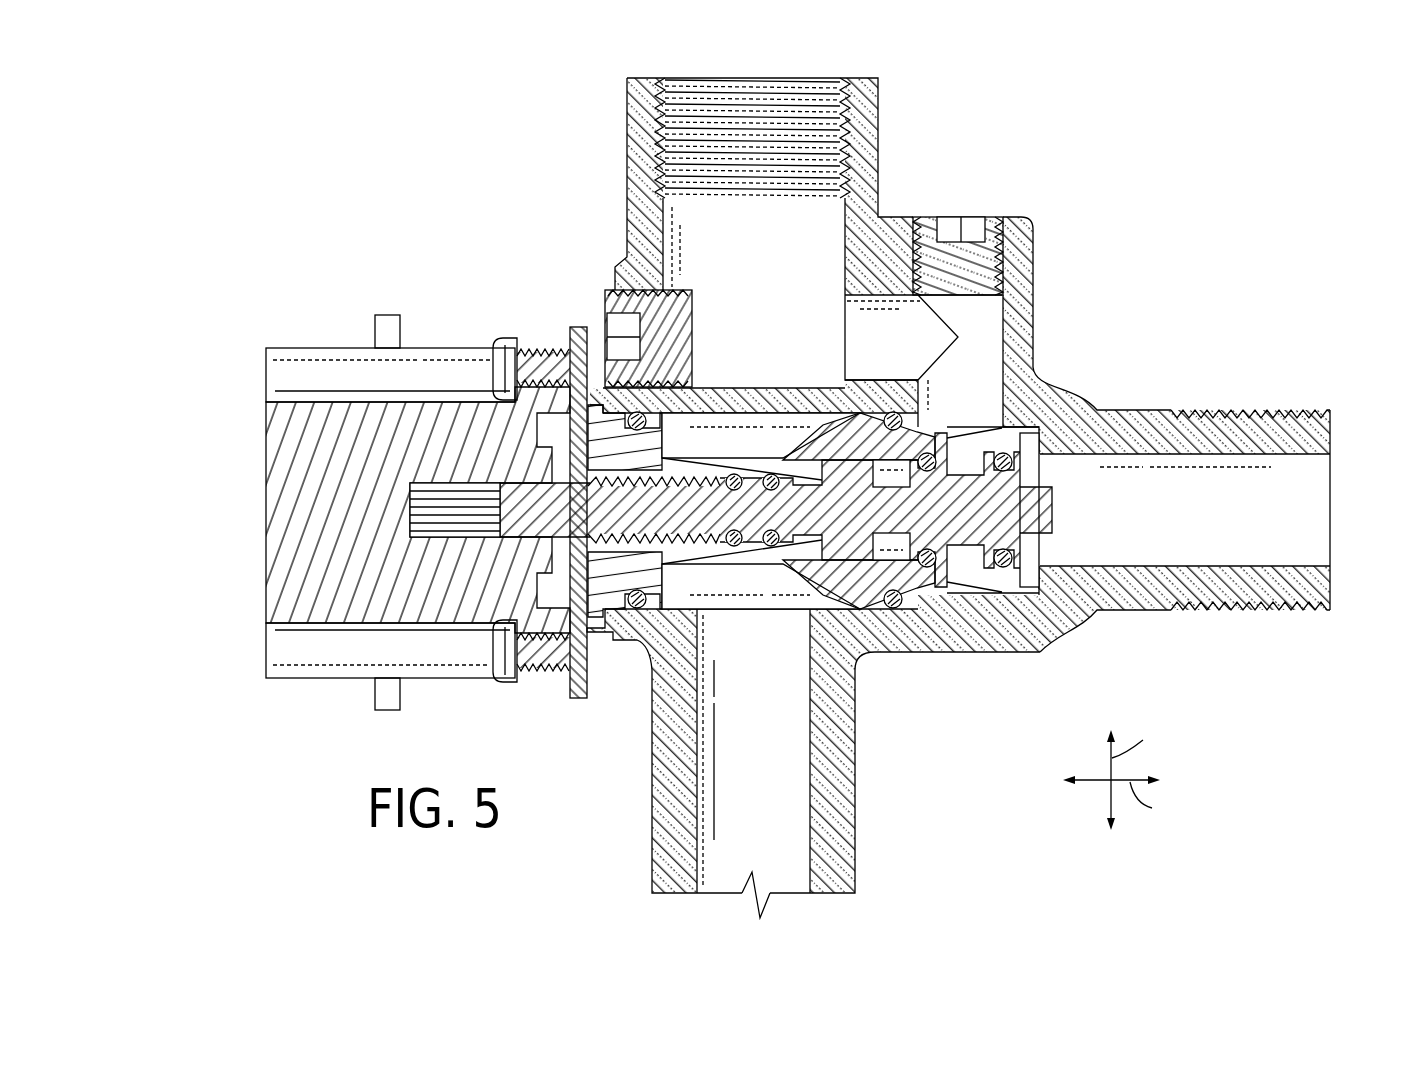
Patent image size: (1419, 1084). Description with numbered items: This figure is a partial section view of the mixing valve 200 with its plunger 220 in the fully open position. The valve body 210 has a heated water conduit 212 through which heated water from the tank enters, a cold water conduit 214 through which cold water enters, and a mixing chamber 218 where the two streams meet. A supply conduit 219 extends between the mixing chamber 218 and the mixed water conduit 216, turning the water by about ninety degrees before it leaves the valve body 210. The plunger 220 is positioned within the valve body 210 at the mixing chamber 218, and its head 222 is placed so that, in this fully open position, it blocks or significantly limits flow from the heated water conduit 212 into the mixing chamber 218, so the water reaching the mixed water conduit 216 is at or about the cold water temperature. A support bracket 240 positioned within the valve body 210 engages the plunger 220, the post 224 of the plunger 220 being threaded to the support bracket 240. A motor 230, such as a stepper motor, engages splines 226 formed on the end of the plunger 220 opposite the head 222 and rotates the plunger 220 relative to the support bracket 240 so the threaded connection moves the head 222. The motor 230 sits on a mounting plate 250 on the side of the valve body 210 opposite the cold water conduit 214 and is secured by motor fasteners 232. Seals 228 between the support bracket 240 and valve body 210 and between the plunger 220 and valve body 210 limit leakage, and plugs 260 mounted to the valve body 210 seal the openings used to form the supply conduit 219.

The mixing valve 200 is at (362, 145).
The valve body 210 is at (860, 655).
The heated water conduit 212 is at (833, 787).
The cold water conduit 214 is at (1143, 606).
The mixed water conduit 216 is at (862, 135).
The mixing chamber 218 is at (690, 598).
The supply conduit 219 is at (975, 394).
The plunger 220 is at (848, 487).
The head 222 is at (1050, 508).
The post 224 is at (676, 462).
The splines 226 is at (410, 513).
The seals 228 is at (668, 498).
The motor 230 is at (287, 380).
The motor fasteners 232 is at (505, 358).
The support bracket 240 is at (830, 585).
The mounting plate 250 is at (578, 615).
The plugs 260 is at (995, 212).